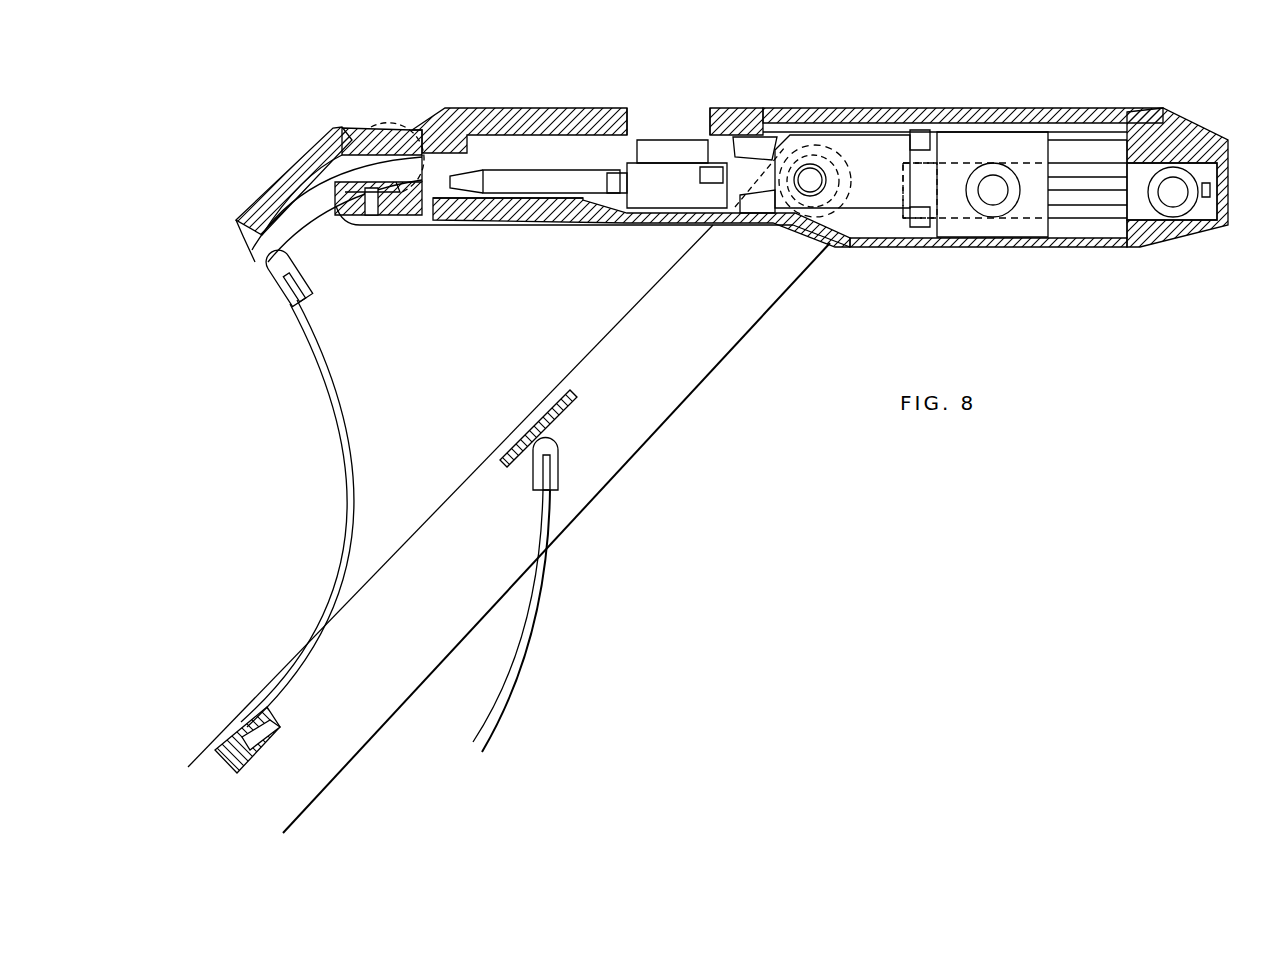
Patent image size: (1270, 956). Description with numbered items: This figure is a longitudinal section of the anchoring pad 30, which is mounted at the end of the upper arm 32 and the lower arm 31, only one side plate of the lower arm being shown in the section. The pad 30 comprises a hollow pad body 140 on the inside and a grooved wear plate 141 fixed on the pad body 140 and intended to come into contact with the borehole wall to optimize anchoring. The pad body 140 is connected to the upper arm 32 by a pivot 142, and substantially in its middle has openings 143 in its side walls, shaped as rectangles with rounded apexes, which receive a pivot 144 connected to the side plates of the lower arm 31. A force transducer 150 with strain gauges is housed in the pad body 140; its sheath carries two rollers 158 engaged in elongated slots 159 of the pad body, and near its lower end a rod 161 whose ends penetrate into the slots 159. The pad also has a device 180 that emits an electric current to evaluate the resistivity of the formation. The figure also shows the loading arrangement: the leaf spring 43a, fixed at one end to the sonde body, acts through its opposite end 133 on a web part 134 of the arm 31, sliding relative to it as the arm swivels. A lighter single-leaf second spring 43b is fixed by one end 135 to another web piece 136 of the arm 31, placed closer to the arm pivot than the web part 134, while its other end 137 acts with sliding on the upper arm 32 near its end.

The anchoring pad 30 is at (425, 103).
The lower arm 31 is at (717, 363).
The upper arm 32 is at (258, 190).
The leaf spring 43a is at (522, 655).
The second spring 43b is at (350, 398).
The end of leaf spring 133 is at (558, 475).
The web part 134 is at (540, 404).
The end of second spring 135 is at (258, 733).
The web piece 136 is at (230, 727).
The other end of second spring 137 is at (300, 258).
The pad body 140 is at (585, 213).
The wear plate 141 is at (735, 118).
The pivot 142 is at (400, 200).
The openings 143 is at (830, 200).
The pivot 144 is at (810, 168).
The force transducer 150 is at (1012, 152).
The rollers 158 is at (1005, 212).
The elongated slots 159 is at (1085, 212).
The rod 161 is at (1185, 205).
The device for emitting electric current 180 is at (637, 128).